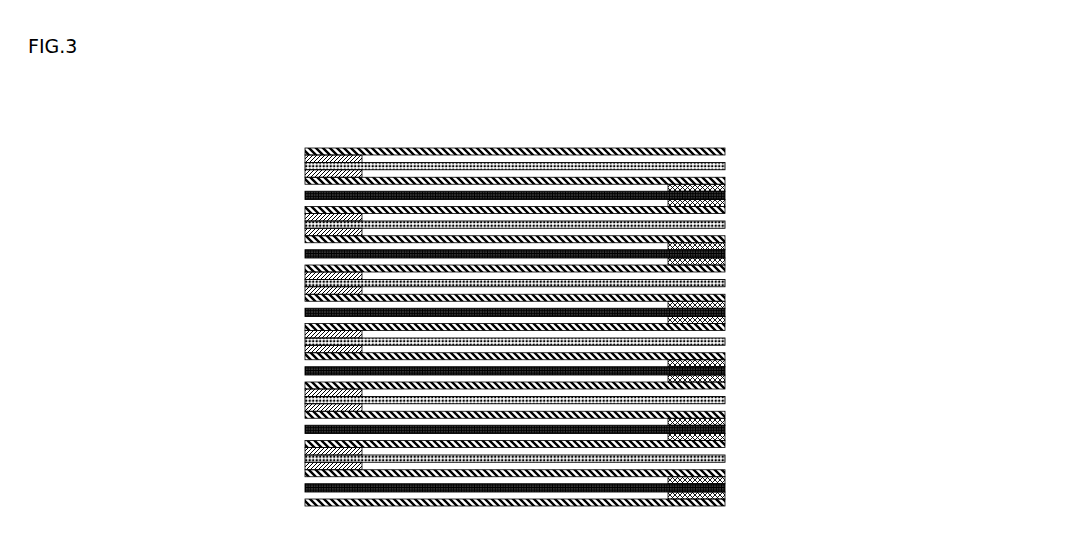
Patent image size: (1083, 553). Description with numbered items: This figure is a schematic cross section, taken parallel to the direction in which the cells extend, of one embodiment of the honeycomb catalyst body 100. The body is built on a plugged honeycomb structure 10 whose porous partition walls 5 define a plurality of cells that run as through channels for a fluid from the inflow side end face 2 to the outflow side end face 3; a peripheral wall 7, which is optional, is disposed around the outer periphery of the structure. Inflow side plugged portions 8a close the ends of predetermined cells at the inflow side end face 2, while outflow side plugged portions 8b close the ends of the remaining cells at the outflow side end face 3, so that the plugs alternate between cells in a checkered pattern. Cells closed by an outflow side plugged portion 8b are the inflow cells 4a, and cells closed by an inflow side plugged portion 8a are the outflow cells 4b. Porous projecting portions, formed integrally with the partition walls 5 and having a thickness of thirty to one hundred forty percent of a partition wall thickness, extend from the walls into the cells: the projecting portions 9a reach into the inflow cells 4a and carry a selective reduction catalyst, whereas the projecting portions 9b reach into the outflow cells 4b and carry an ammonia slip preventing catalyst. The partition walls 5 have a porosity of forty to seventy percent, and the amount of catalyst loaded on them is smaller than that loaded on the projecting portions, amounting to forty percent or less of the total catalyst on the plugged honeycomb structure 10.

The honeycomb catalyst body 100 is at (777, 89).
The plugged honeycomb structure 10 is at (623, 148).
The peripheral wall 7 is at (531, 148).
The inflow side end face 2 is at (306, 327).
The outflow side end face 3 is at (725, 458).
The inflow cell 4a is at (332, 187).
The outflow cell 4b is at (696, 217).
The partition wall 5 is at (725, 417).
The inflow side plugged portion 8a is at (308, 393).
The outflow side plugged portion 8b is at (725, 303).
The projecting portion extending into inflow cell 9a is at (725, 370).
The projecting portion extending into outflow cell 9b is at (308, 283).